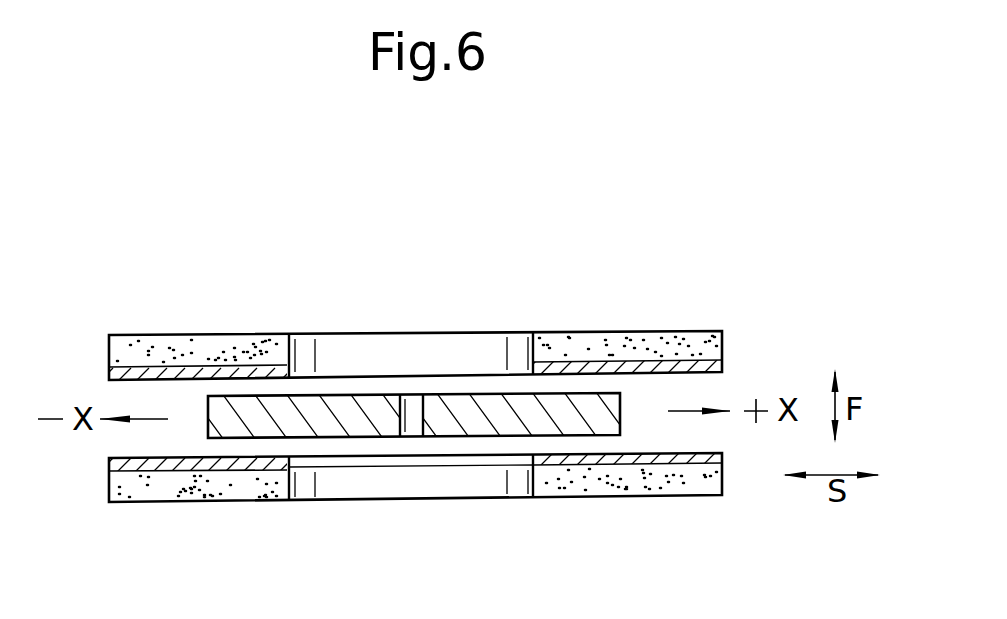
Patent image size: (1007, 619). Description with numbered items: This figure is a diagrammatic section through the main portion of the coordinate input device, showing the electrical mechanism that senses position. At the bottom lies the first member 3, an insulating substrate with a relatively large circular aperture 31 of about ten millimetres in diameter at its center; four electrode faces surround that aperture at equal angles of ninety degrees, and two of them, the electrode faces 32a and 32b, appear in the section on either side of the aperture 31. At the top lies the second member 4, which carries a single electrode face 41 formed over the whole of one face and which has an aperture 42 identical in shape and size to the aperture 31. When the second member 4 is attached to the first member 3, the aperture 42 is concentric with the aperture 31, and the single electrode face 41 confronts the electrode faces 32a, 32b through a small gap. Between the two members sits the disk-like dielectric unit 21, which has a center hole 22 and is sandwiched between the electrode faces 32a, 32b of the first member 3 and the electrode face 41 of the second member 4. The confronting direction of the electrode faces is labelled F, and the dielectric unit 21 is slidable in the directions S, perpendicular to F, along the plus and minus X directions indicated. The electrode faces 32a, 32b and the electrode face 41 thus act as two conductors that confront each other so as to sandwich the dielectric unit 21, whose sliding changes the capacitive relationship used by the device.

The first member 3 is at (697, 505).
The circular aperture 31 is at (395, 496).
The electrode face 32a is at (612, 465).
The electrode face 32b is at (188, 470).
The second member 4 is at (688, 326).
The single electrode face 41 is at (190, 367).
The aperture 42 is at (325, 340).
The dielectric unit 21 is at (377, 386).
The center hole 22 is at (415, 395).